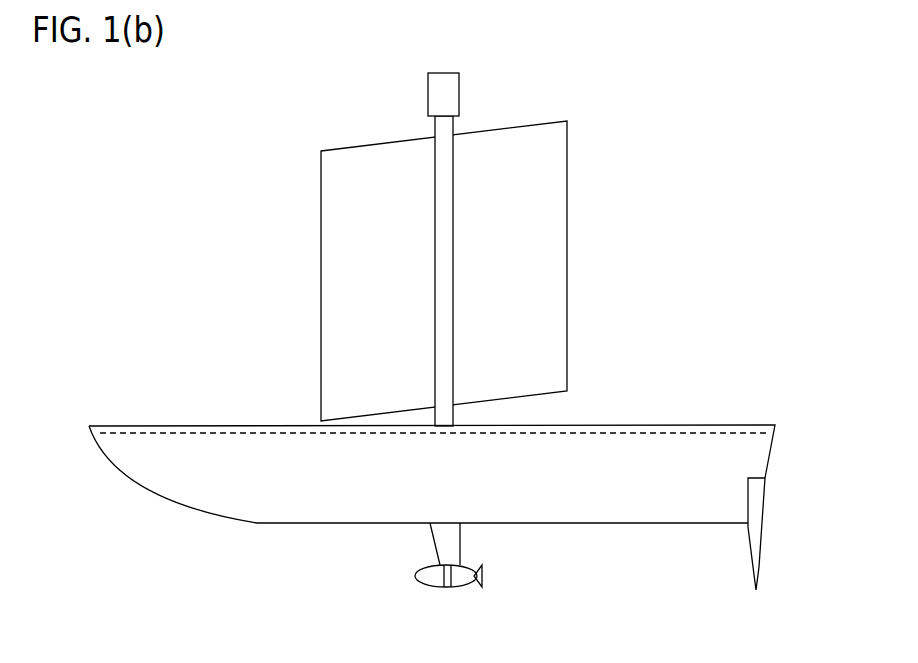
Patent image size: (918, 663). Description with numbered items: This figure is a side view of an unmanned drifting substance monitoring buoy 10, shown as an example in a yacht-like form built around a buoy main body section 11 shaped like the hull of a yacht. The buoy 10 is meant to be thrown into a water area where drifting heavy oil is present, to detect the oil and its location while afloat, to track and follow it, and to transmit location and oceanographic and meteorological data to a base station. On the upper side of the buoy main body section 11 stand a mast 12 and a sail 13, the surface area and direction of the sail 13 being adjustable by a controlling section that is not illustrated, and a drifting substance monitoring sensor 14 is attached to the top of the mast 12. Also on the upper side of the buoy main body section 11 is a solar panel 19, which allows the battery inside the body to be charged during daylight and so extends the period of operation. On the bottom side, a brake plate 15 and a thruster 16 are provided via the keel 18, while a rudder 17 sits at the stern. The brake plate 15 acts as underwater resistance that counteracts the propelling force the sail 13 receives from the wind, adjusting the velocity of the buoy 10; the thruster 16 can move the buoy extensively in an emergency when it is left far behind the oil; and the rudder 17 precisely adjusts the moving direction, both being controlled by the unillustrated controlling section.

The unmanned drifting substance monitoring buoy 10 is at (673, 216).
The buoy main body section 11 is at (432, 473).
The mast 12 is at (453, 197).
The sail 13 is at (567, 212).
The drifting substance monitoring sensor 14 is at (459, 93).
The brake plate 15 is at (447, 587).
The thruster 16 is at (430, 587).
The rudder 17 is at (758, 552).
The keel 18 is at (458, 548).
The solar panel 19 is at (187, 426).